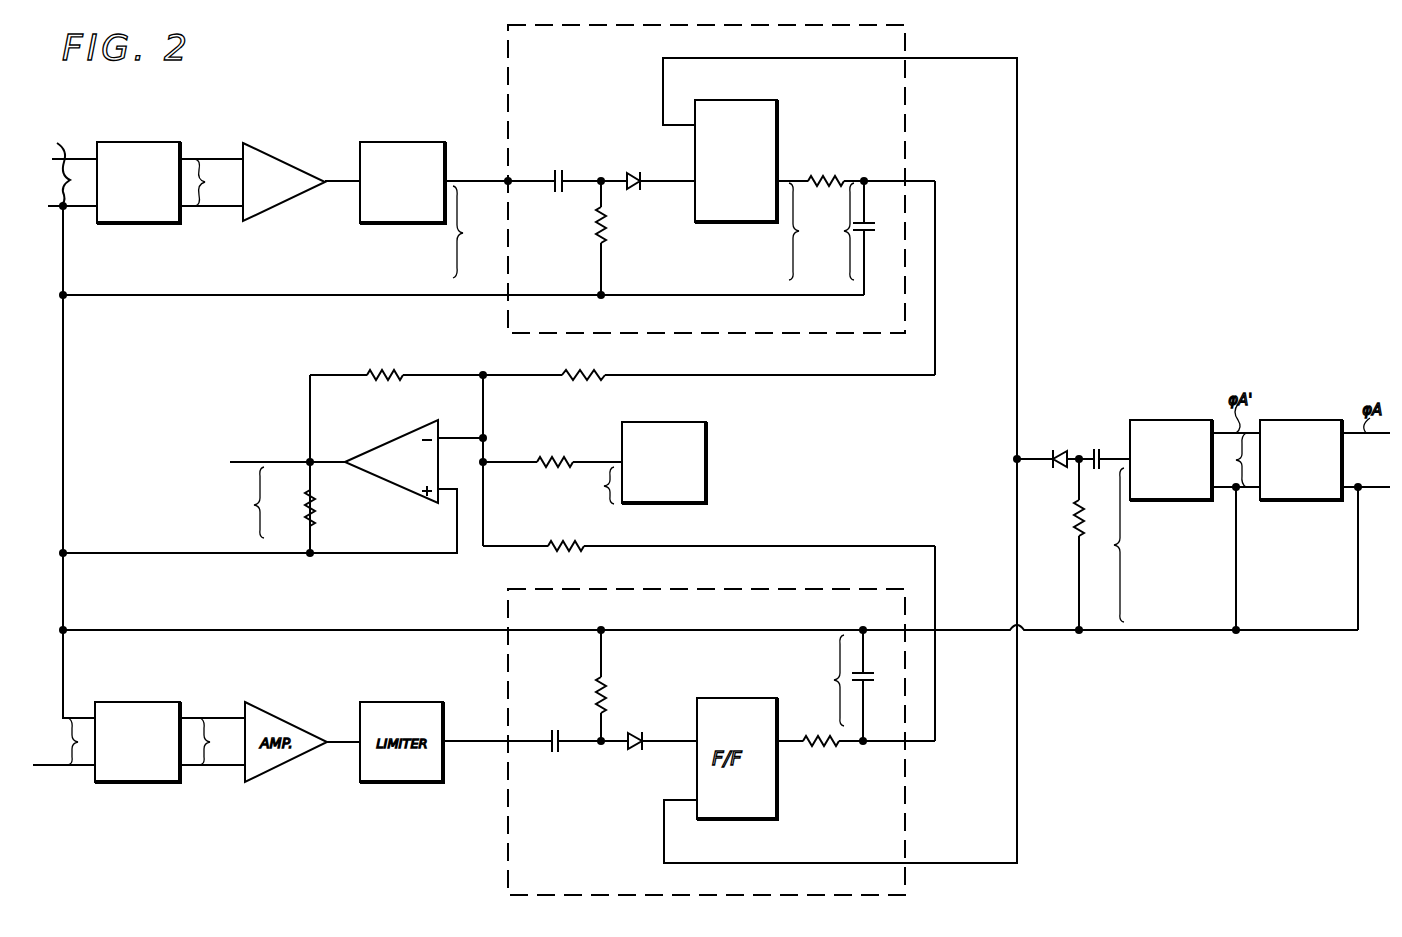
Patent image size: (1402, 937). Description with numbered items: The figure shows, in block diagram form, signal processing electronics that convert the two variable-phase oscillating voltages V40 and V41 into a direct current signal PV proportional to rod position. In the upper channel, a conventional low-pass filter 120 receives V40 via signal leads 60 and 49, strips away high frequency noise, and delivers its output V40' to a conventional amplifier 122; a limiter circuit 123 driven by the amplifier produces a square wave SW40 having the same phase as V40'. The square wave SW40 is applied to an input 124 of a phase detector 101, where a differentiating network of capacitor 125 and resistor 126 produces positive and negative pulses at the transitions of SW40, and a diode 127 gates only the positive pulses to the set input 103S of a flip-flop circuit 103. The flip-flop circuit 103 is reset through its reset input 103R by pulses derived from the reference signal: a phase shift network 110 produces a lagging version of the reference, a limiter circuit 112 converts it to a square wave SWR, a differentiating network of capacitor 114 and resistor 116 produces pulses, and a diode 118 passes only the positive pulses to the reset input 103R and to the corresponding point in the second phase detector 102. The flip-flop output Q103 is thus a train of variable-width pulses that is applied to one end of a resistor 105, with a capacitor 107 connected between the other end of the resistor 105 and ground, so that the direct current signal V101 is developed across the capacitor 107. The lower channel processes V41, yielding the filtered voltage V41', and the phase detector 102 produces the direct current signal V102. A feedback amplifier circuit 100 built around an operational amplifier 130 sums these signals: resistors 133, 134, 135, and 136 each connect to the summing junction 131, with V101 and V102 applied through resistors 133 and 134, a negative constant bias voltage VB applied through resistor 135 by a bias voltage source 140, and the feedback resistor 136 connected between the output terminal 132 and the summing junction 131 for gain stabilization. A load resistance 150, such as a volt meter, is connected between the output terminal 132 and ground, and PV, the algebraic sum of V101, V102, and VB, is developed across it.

The signal lead 60 is at (67, 167).
The signal lead 49 is at (72, 208).
The variable-phase oscillating voltage V40 is at (92, 145).
The low-pass filter 120 is at (138, 142).
The filtered output voltage V40' is at (211, 159).
The amplifier 122 is at (275, 161).
The limiter circuit 123 is at (390, 142).
The input of the phase detector 124 is at (502, 175).
The square wave signal SW40 is at (480, 232).
The capacitor 125 is at (552, 178).
The resistor 126 is at (596, 235).
The diode 127 is at (628, 188).
The flip-flop circuit 103 is at (744, 100).
The reset input 103R is at (690, 125).
The set input 103S is at (692, 181).
The resistor 105 is at (812, 179).
The binary valued signal Q103 is at (813, 231).
The direct current signal V101 is at (830, 231).
The capacitor 107 is at (877, 242).
The phase detector 101 is at (890, 49).
The feedback resistor 136 is at (408, 350).
The resistor 133 is at (600, 375).
The summing junction 131 is at (440, 436).
The output terminal 132 is at (312, 460).
The feedback amplifier circuit 100 is at (290, 438).
The resistor 135 is at (585, 435).
The bias voltage source 140 is at (712, 440).
The bias voltage level VB is at (599, 485).
The operational amplifier 130 is at (408, 486).
The load resistance 150 is at (312, 520).
The direct current signal PV is at (243, 502).
The resistor 134 is at (585, 548).
The diode 118 is at (1060, 455).
The capacitor 114 is at (1100, 455).
The resistor 116 is at (1072, 520).
The square wave SWR is at (1104, 545).
The limiter circuit 112 is at (1172, 420).
The phase shift network 110 is at (1276, 420).
The variable-phase oscillating voltage V41 is at (78, 767).
The filtered output voltage V41' is at (214, 766).
The direct current signal V102 is at (832, 685).
The phase detector 102 is at (880, 886).